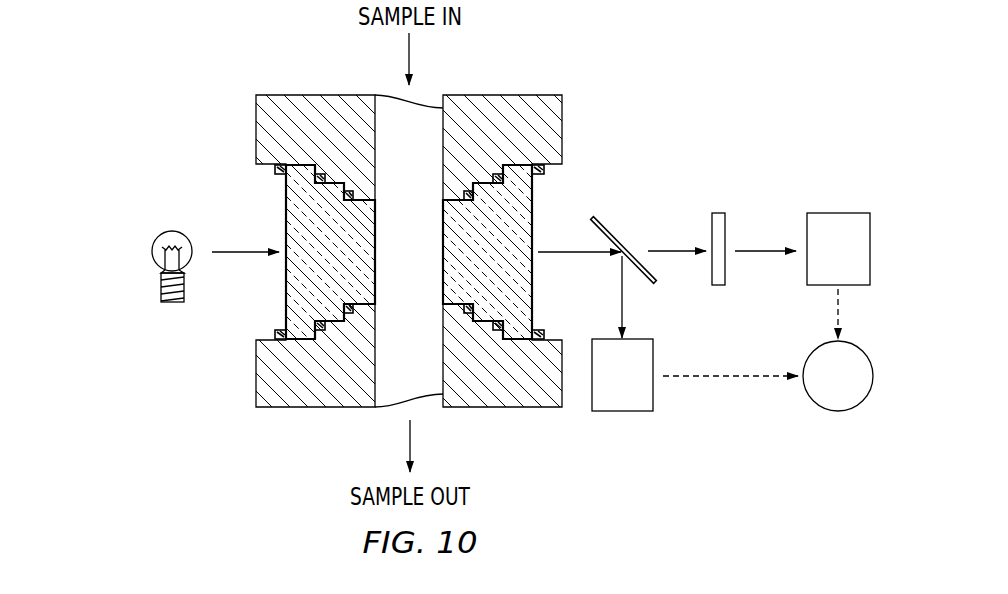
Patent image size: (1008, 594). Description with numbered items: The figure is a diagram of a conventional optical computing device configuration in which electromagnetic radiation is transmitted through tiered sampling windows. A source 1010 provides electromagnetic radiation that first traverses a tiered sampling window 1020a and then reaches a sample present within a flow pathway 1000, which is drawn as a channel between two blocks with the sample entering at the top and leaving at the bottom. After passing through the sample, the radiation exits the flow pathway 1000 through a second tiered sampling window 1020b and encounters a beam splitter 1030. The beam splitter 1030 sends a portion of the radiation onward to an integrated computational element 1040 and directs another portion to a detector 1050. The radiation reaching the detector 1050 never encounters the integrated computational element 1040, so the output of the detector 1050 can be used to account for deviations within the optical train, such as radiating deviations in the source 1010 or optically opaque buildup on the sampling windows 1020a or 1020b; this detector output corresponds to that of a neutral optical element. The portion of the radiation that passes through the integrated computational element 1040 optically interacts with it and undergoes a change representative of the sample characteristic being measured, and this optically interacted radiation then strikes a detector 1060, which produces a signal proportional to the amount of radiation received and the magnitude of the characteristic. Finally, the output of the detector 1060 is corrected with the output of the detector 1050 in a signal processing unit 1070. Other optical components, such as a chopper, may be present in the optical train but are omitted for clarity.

The flow pathway 1000 is at (433, 150).
The source 1010 is at (155, 241).
The tiered sampling window 1020a is at (275, 195).
The tiered sampling window 1020b is at (543, 187).
The beam splitter 1030 is at (606, 226).
The integrated computational element 1040 is at (722, 213).
The detector 1050 is at (645, 388).
The detector 1060 is at (813, 264).
The signal processing unit 1070 is at (815, 388).